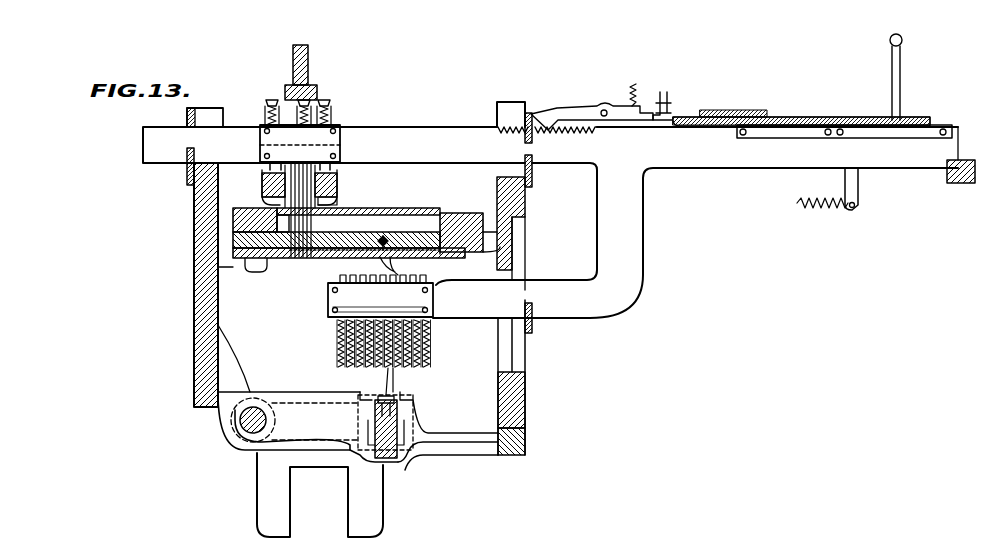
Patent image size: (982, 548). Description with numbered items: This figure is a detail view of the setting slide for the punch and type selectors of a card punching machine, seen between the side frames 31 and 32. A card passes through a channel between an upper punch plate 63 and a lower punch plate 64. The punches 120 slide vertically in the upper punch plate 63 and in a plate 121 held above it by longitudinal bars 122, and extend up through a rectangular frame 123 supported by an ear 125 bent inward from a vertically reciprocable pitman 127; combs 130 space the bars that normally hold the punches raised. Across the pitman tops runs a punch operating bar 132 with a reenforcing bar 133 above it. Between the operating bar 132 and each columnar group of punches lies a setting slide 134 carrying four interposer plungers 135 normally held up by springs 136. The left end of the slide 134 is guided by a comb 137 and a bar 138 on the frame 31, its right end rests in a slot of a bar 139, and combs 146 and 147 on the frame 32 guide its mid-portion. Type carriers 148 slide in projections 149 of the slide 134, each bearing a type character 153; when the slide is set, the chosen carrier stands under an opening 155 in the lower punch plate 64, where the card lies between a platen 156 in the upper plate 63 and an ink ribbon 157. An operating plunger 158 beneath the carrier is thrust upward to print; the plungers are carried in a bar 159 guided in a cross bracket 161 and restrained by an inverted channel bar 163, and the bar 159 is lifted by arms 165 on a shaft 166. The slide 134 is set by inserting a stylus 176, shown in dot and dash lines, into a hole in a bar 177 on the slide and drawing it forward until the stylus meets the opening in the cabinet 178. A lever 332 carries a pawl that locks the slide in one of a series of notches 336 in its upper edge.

The frame 31 is at (210, 318).
The frame 32 is at (513, 360).
The upper punch plate 63 is at (360, 230).
The lower punch plate 64 is at (253, 266).
The punches 120 is at (306, 223).
The plate 121 is at (398, 208).
The longitudinal bars 122 is at (233, 224).
The rectangular frame 123 is at (335, 182).
The ear 125 is at (340, 202).
The pitman 127 is at (362, 520).
The combs 130 is at (270, 185).
The punch operating bar 132 is at (317, 88).
The reenforcing bar 133 is at (308, 62).
The setting slide 134 is at (462, 132).
The interposer plungers 135 is at (300, 104).
The springs 136 is at (300, 147).
The comb 137 is at (187, 172).
The bar 138 is at (187, 116).
The bar 139 is at (947, 176).
The comb 146 is at (533, 118).
The comb 147 is at (534, 176).
The type carriers 148 is at (337, 340).
The projections 149 is at (598, 300).
The type character 153 is at (380, 300).
The opening 155 is at (378, 256).
The platen 156 is at (387, 241).
The ink ribbon 157 is at (398, 282).
The operating plunger 158 is at (383, 378).
The bar 159 is at (386, 462).
The cross bracket 161 is at (463, 452).
The inverted channel bar 163 is at (396, 403).
The arms 165 is at (420, 468).
The shaft 166 is at (257, 414).
The stylus 176 is at (890, 71).
The bar 177 is at (872, 135).
The cabinet 178 is at (668, 96).
The lever 332 is at (612, 104).
The notches 336 is at (506, 134).